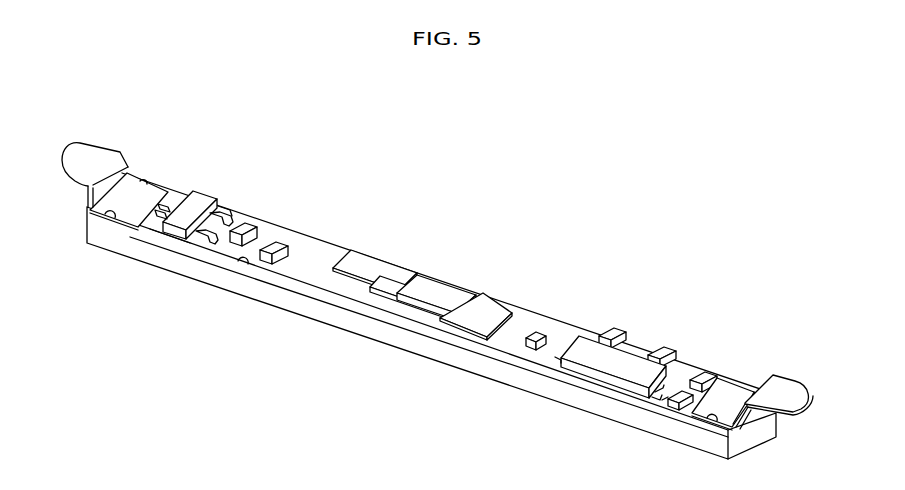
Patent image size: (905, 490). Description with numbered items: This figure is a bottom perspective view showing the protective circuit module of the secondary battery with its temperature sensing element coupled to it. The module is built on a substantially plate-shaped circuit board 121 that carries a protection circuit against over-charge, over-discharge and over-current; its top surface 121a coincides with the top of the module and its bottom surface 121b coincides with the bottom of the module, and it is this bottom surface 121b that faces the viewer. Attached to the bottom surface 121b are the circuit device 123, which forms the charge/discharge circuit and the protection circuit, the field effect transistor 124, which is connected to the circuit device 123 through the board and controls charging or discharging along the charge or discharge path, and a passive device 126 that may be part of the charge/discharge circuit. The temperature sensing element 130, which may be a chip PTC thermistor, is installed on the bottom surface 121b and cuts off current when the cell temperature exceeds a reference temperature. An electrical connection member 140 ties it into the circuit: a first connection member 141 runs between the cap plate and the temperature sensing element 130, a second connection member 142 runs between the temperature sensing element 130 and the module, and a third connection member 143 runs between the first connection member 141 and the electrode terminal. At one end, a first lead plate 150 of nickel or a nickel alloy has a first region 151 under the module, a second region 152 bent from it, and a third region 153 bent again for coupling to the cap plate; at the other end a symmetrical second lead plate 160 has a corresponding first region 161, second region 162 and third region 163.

The circuit board 121 is at (575, 400).
The top surface of the circuit board 121a is at (192, 280).
The bottom surface of the circuit board 121b is at (247, 270).
The circuit device 123 is at (580, 342).
The field effect transistor 124 is at (200, 197).
The passive device 126 is at (251, 221).
The temperature sensing element 130 is at (430, 310).
The electrical connection member 140 is at (431, 295).
The first connection member 141 is at (443, 288).
The second connection member 142 is at (485, 294).
The third connection member 143 is at (378, 265).
The first lead plate 150 is at (130, 146).
The first region 151 is at (157, 188).
The second region 152 is at (122, 167).
The third region 153 is at (95, 143).
The second lead plate 160 is at (765, 355).
The first region 161 is at (733, 387).
The second region 162 is at (745, 398).
The third region 163 is at (792, 365).